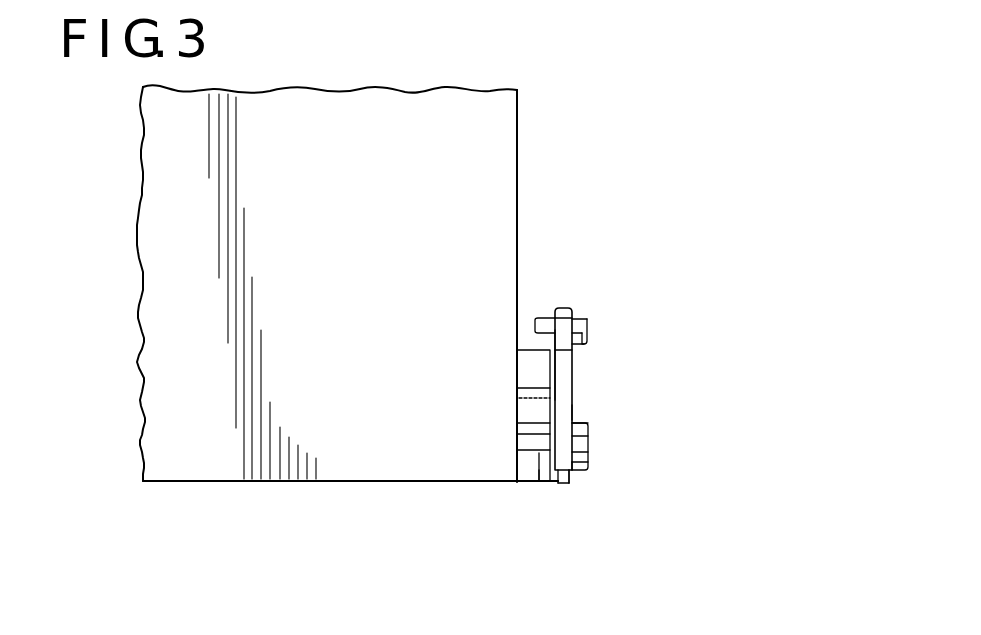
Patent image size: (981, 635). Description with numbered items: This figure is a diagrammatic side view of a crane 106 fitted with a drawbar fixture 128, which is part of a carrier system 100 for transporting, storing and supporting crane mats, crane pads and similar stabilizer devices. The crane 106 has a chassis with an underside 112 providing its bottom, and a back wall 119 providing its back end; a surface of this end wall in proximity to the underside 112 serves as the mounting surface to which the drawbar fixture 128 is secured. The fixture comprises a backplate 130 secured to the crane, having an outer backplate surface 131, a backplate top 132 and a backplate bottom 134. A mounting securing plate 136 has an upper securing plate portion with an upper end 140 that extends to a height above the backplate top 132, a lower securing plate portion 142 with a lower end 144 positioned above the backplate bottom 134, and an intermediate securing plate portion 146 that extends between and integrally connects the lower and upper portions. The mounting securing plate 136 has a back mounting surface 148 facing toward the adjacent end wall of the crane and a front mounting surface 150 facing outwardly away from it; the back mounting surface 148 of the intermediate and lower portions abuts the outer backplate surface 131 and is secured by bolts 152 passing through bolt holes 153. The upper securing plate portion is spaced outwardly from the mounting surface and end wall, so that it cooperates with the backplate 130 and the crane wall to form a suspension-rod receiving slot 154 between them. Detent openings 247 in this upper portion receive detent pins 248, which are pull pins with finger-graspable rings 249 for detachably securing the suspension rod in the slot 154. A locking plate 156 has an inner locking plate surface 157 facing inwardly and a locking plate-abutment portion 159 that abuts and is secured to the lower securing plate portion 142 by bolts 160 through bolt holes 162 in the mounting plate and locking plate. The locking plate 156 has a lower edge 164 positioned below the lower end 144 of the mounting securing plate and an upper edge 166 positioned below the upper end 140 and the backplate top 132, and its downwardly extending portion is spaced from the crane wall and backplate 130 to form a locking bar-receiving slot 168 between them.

The carrier system 100 is at (697, 545).
The crane 106 is at (163, 191).
The underside 112 is at (180, 481).
The back wall 119 is at (519, 133).
The drawbar fixture 128 is at (538, 483).
The backplate 130 is at (545, 418).
The outer backplate surface 131 is at (536, 470).
The backplate top 132 is at (577, 349).
The backplate bottom 134 is at (526, 483).
The mounting securing plate 136 is at (586, 316).
The upper end 140 is at (560, 310).
The lower securing plate portion 142 is at (572, 452).
The lower end 144 is at (574, 472).
The intermediate securing plate portion 146 is at (572, 413).
The back mounting surface 148 is at (548, 424).
The front mounting surface 150 is at (563, 381).
The bolts 152 is at (531, 386).
The bolt holes 153 is at (548, 388).
The suspension-rod receiving slot 154 is at (526, 348).
The locking plate 156 is at (578, 470).
The inner locking plate surface 157 is at (573, 462).
The locking plate-abutment portion 159 is at (548, 434).
The bolts 160 is at (548, 485).
The bolt holes 162 is at (548, 450).
The lower edge 164 is at (573, 470).
The upper edge 166 is at (588, 424).
The locking bar-receiving slot 168 is at (560, 488).
The detent openings 247 is at (575, 305).
The detent pins 248 is at (542, 318).
The finger-graspable rings 249 is at (590, 345).